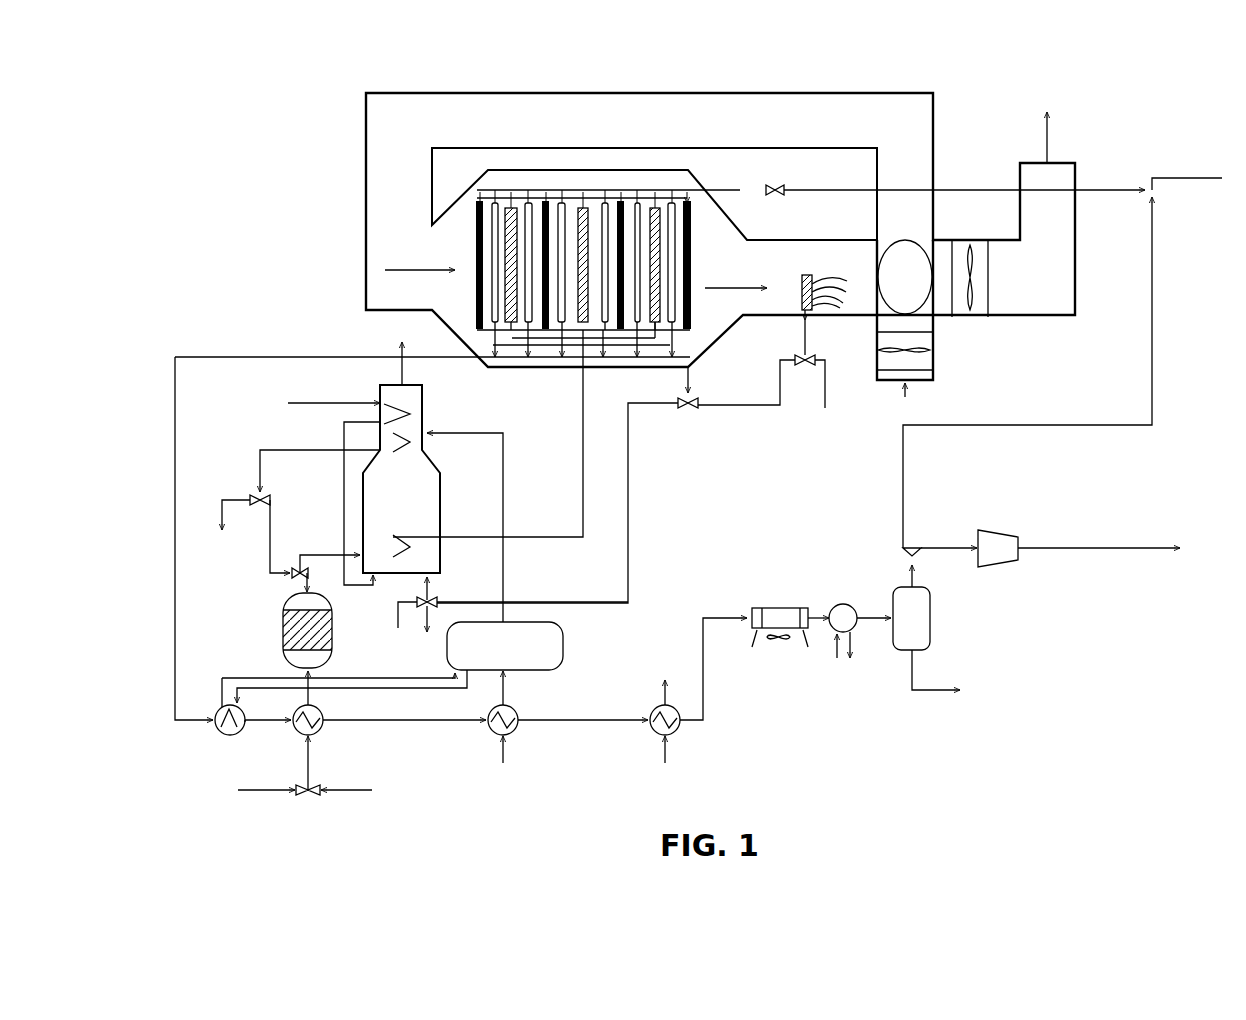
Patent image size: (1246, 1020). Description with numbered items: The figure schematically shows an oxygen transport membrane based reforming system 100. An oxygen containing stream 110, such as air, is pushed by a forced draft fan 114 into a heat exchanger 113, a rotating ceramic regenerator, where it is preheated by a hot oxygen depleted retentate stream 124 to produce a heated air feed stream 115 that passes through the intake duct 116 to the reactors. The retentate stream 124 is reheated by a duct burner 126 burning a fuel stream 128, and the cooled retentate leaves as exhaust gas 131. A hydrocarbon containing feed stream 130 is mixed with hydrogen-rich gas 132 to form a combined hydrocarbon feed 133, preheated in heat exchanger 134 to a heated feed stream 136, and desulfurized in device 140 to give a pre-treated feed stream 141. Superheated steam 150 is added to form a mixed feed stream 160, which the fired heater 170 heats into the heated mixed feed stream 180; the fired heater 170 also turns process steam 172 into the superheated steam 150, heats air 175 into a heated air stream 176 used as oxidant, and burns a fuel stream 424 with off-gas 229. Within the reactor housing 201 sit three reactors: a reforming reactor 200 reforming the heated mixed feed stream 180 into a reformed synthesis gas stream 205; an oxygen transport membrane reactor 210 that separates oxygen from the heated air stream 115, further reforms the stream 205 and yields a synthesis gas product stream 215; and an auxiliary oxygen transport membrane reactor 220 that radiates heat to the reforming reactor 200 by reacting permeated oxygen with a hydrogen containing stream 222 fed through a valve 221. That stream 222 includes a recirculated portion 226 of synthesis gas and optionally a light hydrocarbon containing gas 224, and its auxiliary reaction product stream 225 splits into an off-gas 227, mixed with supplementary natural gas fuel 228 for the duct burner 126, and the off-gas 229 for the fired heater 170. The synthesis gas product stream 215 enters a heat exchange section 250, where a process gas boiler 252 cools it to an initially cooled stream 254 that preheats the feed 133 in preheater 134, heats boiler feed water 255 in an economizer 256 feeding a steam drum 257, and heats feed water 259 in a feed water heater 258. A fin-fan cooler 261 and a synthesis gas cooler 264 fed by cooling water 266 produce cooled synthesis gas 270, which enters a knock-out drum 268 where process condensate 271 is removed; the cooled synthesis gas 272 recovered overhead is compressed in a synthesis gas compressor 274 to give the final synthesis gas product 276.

The oxygen transport membrane based reforming system 100 is at (302, 103).
The oxygen containing stream 110 is at (910, 395).
The heat exchanger 113 is at (885, 305).
The forced draft fan 114 is at (935, 350).
The heated air feed stream 115 is at (402, 292).
The intake duct 116 is at (620, 93).
The oxygen depleted retentate stream 124 is at (720, 295).
The duct burner 126 is at (802, 288).
The fuel stream 128 is at (802, 333).
The hydrocarbon containing feed stream 130 is at (272, 790).
The exhaust gas 131 is at (1050, 140).
The hydrogen-rich gas 132 is at (345, 790).
The combined hydrocarbon feed 133 is at (307, 763).
The heat exchanger 134 is at (328, 722).
The heated feed stream 136 is at (307, 697).
The sulfur removal device 140 is at (332, 642).
The pre-treated natural gas and hydrogen feed stream 141 is at (303, 593).
The superheated steam 150 is at (265, 450).
The mixed feed stream 160 is at (337, 553).
The fired heater 170 is at (430, 497).
The process steam 172 is at (470, 433).
The air 175 is at (340, 403).
The heated air stream 176 is at (344, 432).
The heated mixed feed stream 180 is at (583, 478).
The reforming reactor 200 is at (668, 212).
The reactor housing 201 is at (610, 370).
The reformed synthesis gas stream 205 is at (580, 208).
The oxygen transport membrane reactor 210 is at (528, 202).
The synthesis gas product stream 215 is at (245, 357).
The auxiliary oxygen transport membrane reactor 220 is at (477, 243).
The valve 221 is at (786, 190).
The hydrogen containing stream 222 is at (975, 190).
The light hydrocarbon containing gas 224 is at (1180, 178).
The auxiliary reaction product stream 225 is at (690, 380).
The recirculated portion of synthesis gas 226 is at (1085, 425).
The off-gas 227 is at (743, 408).
The supplementary natural gas fuel 228 is at (830, 400).
The off-gas 229 is at (628, 473).
The heat exchange section 250 is at (440, 800).
The process gas boiler 252 is at (218, 717).
The initially cooled synthesis gas product stream 254 is at (253, 723).
The boiler feed water 255 is at (502, 755).
The economizer 256 is at (520, 725).
The steam drum 257 is at (560, 628).
The feed water heater 258 is at (658, 730).
The feed water stream 259 is at (668, 748).
The fin-fan cooler 261 is at (763, 613).
The synthesis gas cooler 264 is at (860, 610).
The cooling water 266 is at (837, 652).
The knock-out drum 268 is at (925, 628).
The cooled synthesis gas 270 is at (875, 622).
The process condensate stream 271 is at (933, 687).
The cooled synthesis gas 272 is at (940, 538).
The synthesis gas compressor 274 is at (1000, 567).
The final synthesis gas product 276 is at (1115, 548).
The fuel stream 424 is at (513, 604).